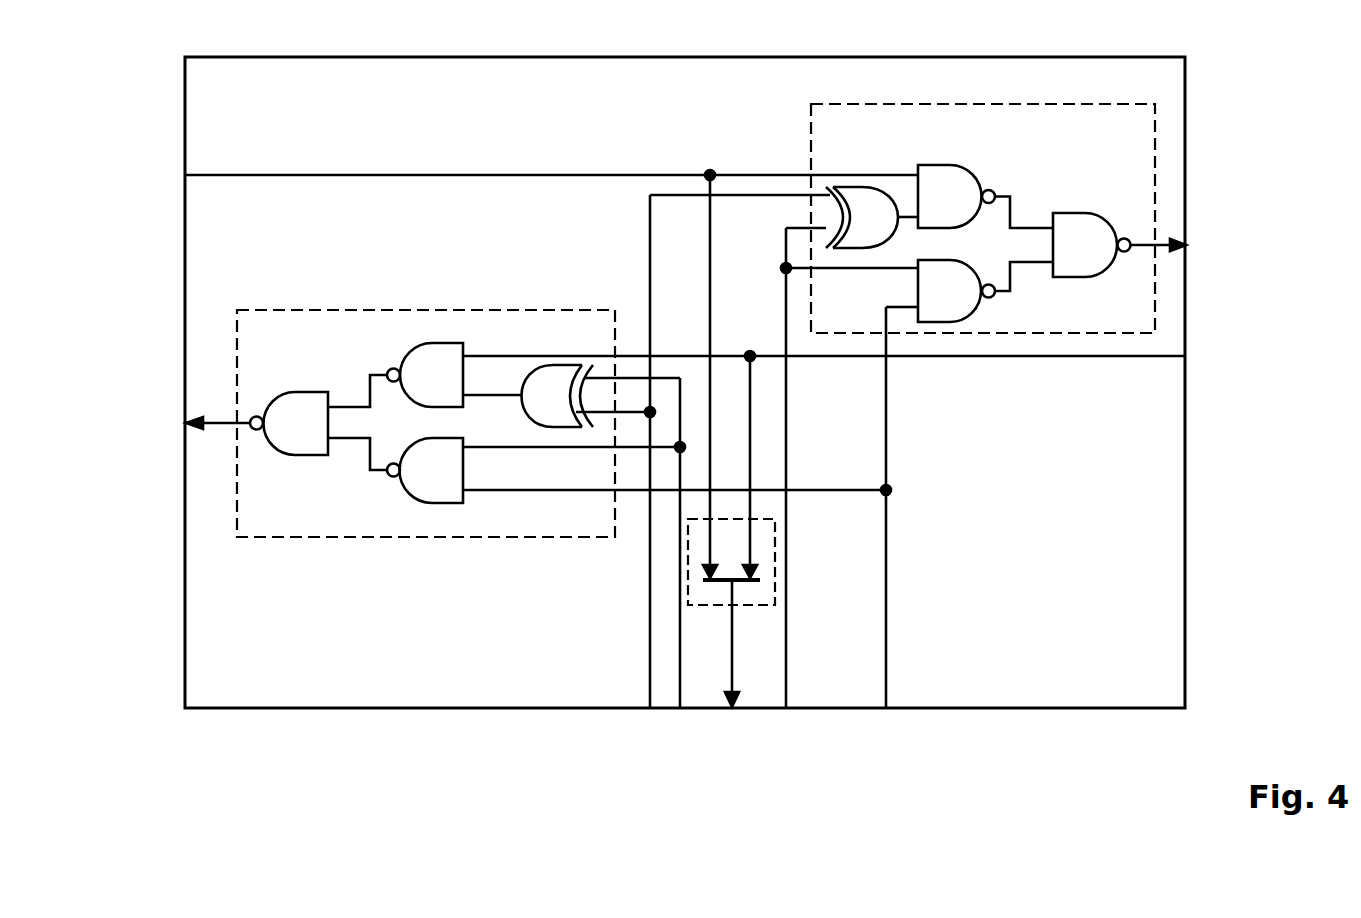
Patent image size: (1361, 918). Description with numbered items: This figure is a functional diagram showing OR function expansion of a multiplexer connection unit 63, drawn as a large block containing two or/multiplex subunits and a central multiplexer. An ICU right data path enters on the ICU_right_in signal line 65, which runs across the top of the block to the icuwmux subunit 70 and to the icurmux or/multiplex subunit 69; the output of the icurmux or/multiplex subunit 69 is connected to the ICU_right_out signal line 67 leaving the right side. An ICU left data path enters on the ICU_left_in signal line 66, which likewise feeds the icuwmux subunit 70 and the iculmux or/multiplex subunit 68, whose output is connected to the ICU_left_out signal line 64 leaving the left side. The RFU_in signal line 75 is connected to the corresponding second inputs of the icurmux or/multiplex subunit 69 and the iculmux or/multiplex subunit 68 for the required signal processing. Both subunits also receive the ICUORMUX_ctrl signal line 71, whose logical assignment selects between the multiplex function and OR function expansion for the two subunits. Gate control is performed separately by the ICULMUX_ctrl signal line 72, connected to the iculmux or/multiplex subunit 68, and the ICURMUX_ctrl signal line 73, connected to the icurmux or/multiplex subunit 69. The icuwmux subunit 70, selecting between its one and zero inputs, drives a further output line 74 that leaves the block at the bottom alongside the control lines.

The logic block 63 is at (225, 678).
The ICU_left_out signal line 64 is at (202, 420).
The ICU_right_in signal line 65 is at (225, 173).
The ICU_left_in signal line 66 is at (1187, 340).
The ICU_right_out signal line 67 is at (1170, 240).
The iculmux or/multiplex subunit 68 is at (253, 338).
The icurmux or/multiplex subunit 69 is at (1090, 170).
The icuwmux subunit 70 is at (762, 540).
The ICUORMUX_ctrl signal line 71 is at (653, 708).
The ICULMUX_ctrl signal line 72 is at (682, 708).
The ICURMUX_ctrl signal line 73 is at (788, 708).
The multiplexer output line 74 is at (733, 708).
The RFU_in signal line 75 is at (887, 708).